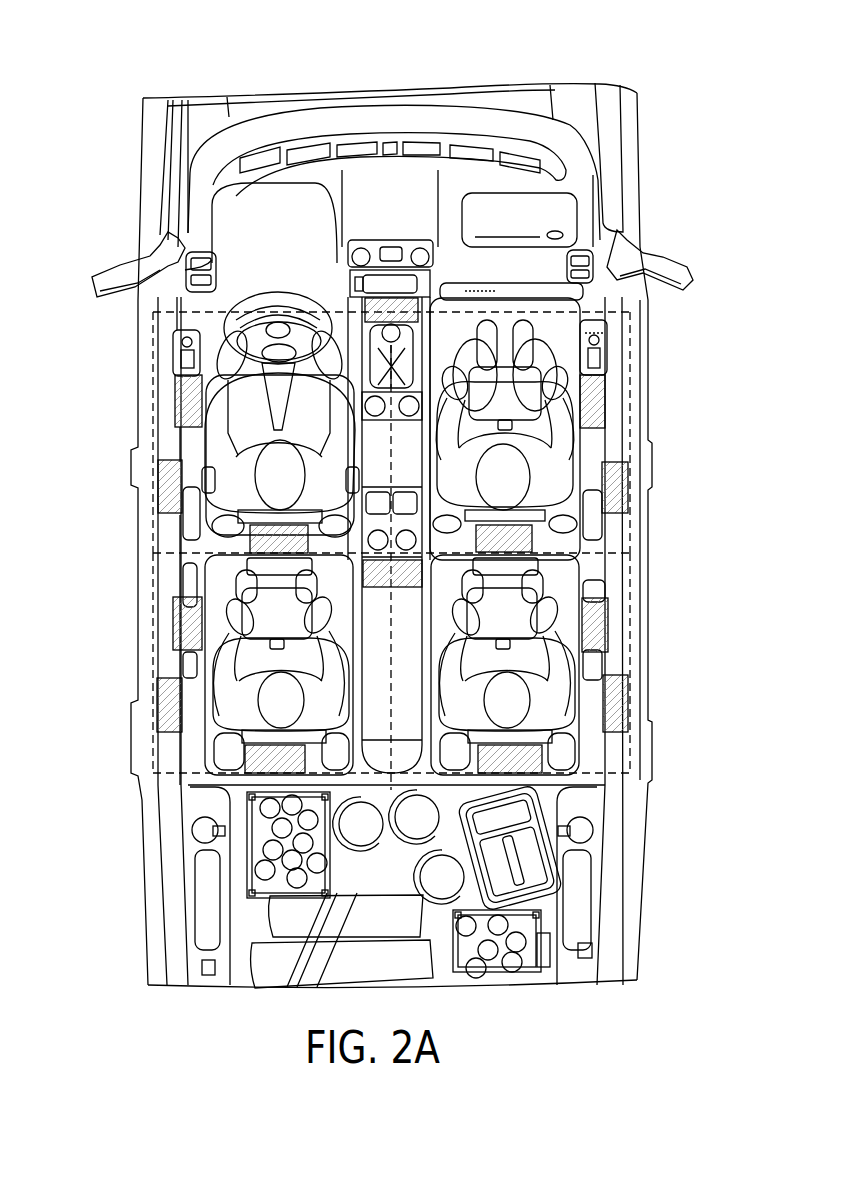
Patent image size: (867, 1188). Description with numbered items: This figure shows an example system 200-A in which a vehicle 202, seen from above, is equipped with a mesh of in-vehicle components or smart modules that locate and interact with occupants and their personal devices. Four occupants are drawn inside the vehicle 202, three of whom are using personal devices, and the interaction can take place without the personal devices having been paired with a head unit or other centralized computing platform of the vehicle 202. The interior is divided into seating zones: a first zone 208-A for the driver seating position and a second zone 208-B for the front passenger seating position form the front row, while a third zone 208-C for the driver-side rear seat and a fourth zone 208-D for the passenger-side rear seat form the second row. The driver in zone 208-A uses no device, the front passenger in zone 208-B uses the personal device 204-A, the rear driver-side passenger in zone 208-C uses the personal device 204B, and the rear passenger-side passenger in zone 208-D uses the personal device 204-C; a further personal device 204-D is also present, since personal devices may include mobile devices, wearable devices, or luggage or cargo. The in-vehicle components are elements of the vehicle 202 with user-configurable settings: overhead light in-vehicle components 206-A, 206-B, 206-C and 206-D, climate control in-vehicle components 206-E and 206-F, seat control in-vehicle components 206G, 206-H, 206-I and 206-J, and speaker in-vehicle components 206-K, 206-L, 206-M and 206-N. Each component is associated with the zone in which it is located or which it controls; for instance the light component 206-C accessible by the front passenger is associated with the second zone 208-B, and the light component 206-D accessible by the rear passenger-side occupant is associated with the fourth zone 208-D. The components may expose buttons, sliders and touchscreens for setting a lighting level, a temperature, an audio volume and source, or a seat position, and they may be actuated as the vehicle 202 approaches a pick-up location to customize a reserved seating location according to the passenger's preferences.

The system 200-A is at (118, 85).
The vehicle 202 is at (143, 183).
The personal device 204-A is at (550, 373).
The personal device 204B is at (246, 598).
The personal device 204-C is at (543, 597).
The personal device 204-D is at (248, 848).
The overhead light in-vehicle component 206-A is at (203, 478).
The overhead light in-vehicle component 206-B is at (160, 715).
The overhead light in-vehicle component 206-C is at (628, 490).
The overhead light in-vehicle component 206-D is at (628, 700).
The climate control in-vehicle component 206-E is at (365, 308).
The climate control in-vehicle component 206-F is at (172, 488).
The seat control in-vehicle component 206G is at (176, 392).
The seat control in-vehicle component 206-H is at (175, 625).
The seat control in-vehicle component 206-I is at (606, 402).
The seat control in-vehicle component 206-J is at (608, 622).
The speaker in-vehicle component 206-K is at (300, 553).
The speaker in-vehicle component 206-L is at (243, 770).
The speaker in-vehicle component 206-M is at (535, 540).
The speaker in-vehicle component 206-N is at (540, 760).
The first zone 208-A is at (150, 415).
The second zone 208-B is at (633, 422).
The third zone 208-C is at (150, 683).
The fourth zone 208-D is at (633, 652).